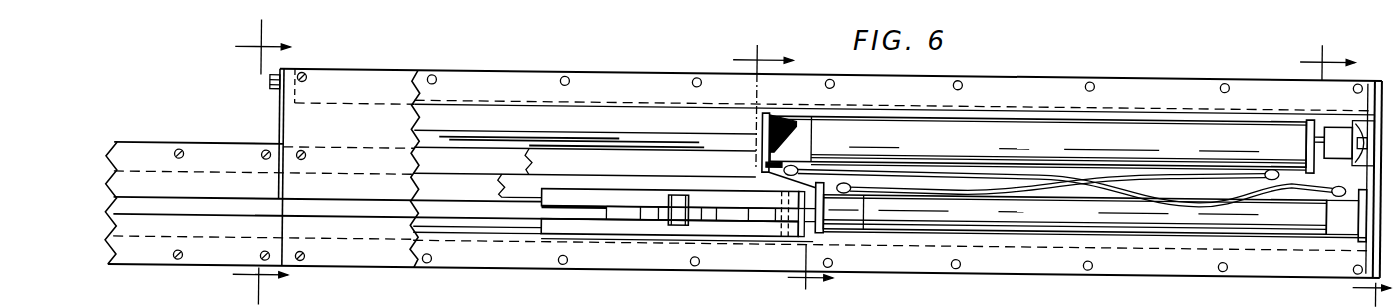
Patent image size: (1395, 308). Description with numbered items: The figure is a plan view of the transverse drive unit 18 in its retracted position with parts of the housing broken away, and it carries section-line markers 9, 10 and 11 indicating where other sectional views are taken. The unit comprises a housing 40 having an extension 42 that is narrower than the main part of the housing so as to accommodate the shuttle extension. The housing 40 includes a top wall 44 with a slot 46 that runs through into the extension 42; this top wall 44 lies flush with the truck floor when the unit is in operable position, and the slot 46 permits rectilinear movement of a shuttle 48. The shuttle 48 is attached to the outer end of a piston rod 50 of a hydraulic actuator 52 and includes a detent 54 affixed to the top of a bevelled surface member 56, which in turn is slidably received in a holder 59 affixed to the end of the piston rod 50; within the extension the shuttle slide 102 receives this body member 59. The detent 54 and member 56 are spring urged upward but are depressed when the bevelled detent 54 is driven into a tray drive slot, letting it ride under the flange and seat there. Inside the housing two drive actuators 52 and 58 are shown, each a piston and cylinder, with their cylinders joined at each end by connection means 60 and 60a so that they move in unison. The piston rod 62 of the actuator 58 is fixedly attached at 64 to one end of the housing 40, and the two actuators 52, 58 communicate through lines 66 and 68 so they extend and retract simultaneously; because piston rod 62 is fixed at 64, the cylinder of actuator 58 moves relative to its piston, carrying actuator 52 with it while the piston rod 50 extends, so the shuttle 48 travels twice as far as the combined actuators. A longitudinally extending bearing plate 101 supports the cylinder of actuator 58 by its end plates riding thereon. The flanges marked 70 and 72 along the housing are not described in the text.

The transverse drive unit 18 is at (650, 56).
The housing 40 is at (354, 90).
The extension 42 is at (160, 149).
The top wall 44 is at (401, 78).
The slot 46 is at (225, 199).
The shuttle 48 is at (665, 191).
The piston rod 50 is at (802, 207).
The hydraulic actuator 52 is at (1091, 212).
The detent 54 is at (680, 197).
The bevelled surface member 56 is at (705, 206).
The actuator 58 is at (1038, 143).
The holder 59 is at (628, 207).
The connection means 60 is at (779, 166).
The connection means 60a is at (1347, 166).
The piston rod 62 is at (1320, 108).
The fixed attachment 64 is at (1343, 118).
The line 66 is at (905, 166).
The line 68 is at (943, 180).
The outer channel top flange 70 is at (504, 82).
The outer channel bottom flange 72 is at (517, 245).
The bearing plate 101 is at (577, 137).
The shuttle slide 102 is at (542, 204).
The section line 9- 9 is at (782, 169).
The section line 10- 10 is at (261, 162).
The section line 11- 11 is at (1342, 173).